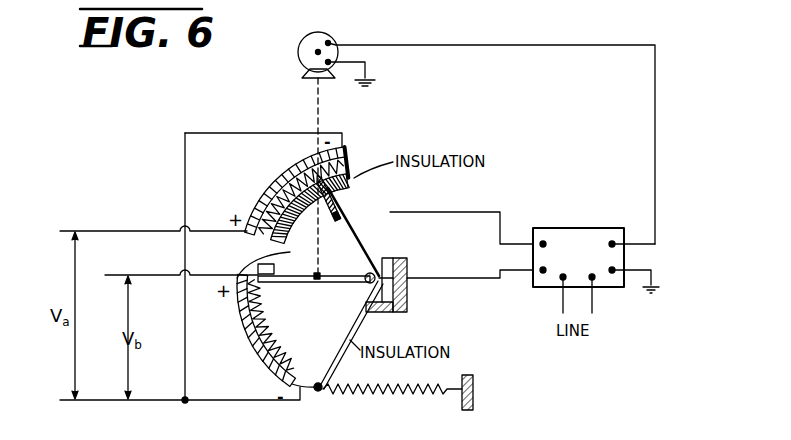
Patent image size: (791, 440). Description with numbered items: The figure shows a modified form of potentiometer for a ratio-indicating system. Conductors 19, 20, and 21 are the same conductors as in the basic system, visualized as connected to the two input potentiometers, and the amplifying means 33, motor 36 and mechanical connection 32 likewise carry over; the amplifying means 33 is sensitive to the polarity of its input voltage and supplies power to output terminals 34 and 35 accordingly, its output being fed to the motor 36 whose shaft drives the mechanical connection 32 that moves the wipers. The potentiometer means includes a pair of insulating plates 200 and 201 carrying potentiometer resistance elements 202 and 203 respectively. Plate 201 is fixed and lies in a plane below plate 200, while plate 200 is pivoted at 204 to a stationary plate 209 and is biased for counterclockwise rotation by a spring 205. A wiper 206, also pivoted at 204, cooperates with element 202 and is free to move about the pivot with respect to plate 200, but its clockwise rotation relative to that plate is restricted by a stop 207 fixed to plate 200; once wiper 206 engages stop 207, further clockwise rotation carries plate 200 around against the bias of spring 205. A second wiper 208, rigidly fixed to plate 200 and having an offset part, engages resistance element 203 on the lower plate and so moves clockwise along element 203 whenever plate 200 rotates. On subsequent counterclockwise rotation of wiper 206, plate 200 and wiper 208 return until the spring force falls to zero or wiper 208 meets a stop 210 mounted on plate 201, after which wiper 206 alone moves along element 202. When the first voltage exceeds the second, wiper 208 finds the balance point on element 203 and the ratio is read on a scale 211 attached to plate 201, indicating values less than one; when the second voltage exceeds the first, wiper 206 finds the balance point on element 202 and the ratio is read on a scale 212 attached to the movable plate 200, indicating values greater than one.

The conductor 19 is at (117, 231).
The conductor 20 is at (107, 400).
The conductor 21 is at (141, 275).
The mechanical connection 32 is at (315, 116).
The amplifying means 33 is at (538, 228).
The output terminal 34 is at (611, 240).
The output terminal 35 is at (614, 282).
The motor 36 is at (336, 38).
The insulating plate 200 is at (365, 320).
The insulating plate 201 is at (349, 153).
The potentiometer resistance element 202 is at (300, 338).
The potentiometer resistance element 203 is at (292, 174).
The pivot 204 is at (367, 271).
The spring 205 is at (384, 395).
The wiper 206 is at (323, 283).
The stop 207 is at (262, 264).
The wiper 208 is at (347, 189).
The stationary plate 209 is at (408, 292).
The stop 210 is at (262, 245).
The scale 211 is at (261, 193).
The scale 212 is at (244, 339).